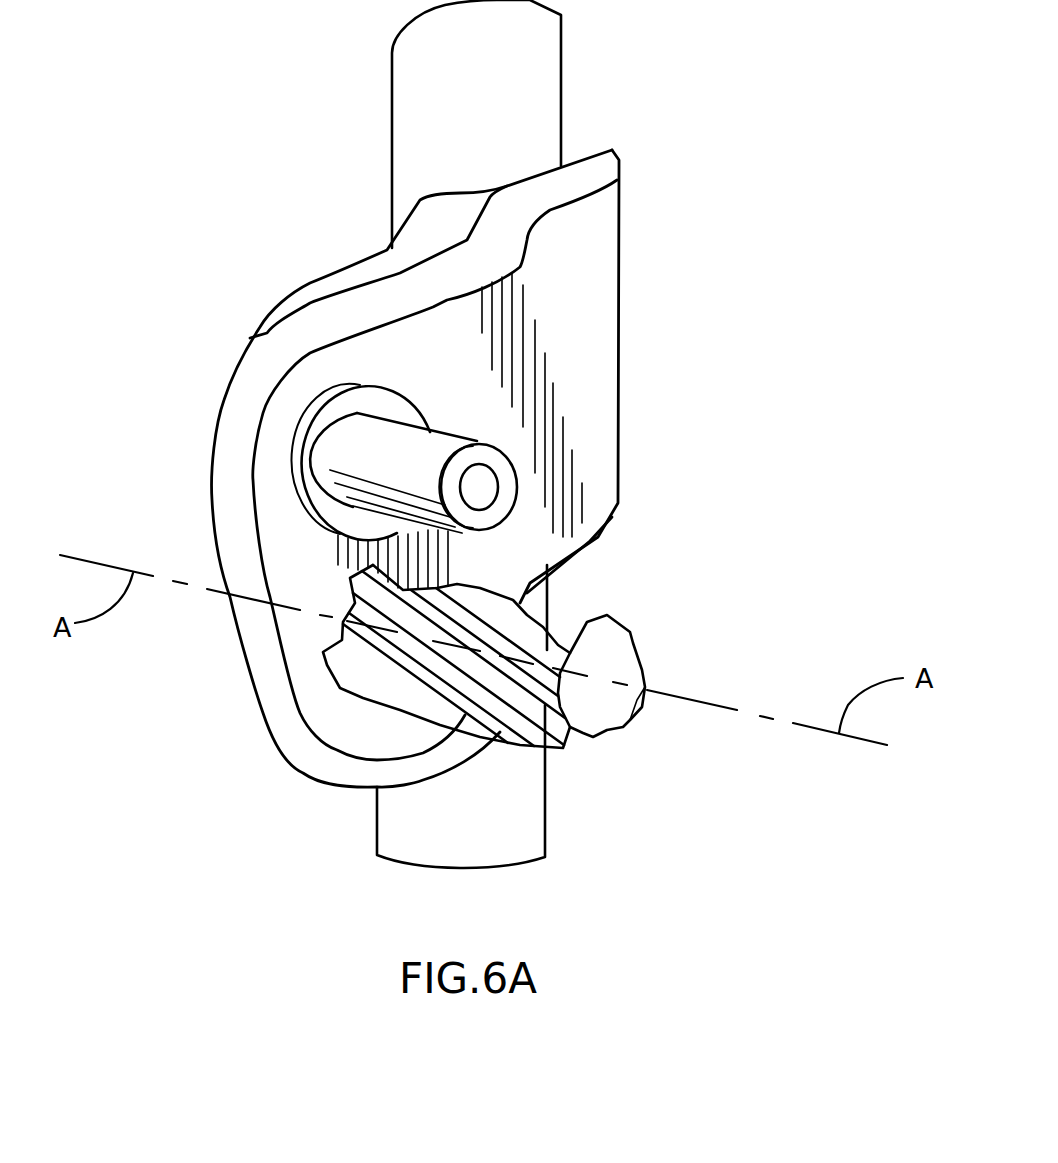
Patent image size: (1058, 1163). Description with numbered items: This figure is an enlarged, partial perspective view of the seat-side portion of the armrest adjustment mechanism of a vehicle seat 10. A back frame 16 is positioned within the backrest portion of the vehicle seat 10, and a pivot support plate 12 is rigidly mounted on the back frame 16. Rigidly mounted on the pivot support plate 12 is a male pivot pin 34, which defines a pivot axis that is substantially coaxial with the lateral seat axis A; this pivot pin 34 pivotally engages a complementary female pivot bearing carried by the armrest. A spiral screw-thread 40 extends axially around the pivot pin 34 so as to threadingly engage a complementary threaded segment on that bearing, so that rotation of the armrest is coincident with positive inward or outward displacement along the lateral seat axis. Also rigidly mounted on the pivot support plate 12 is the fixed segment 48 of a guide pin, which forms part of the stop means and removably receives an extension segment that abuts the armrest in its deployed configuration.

The vehicle seat 10 is at (363, 132).
The pivot support plate 12 is at (550, 340).
The back frame 16 is at (548, 58).
The male pivot pin 34 is at (613, 665).
The spiral screw-thread 40 is at (517, 623).
The fixed segment 48 is at (330, 470).